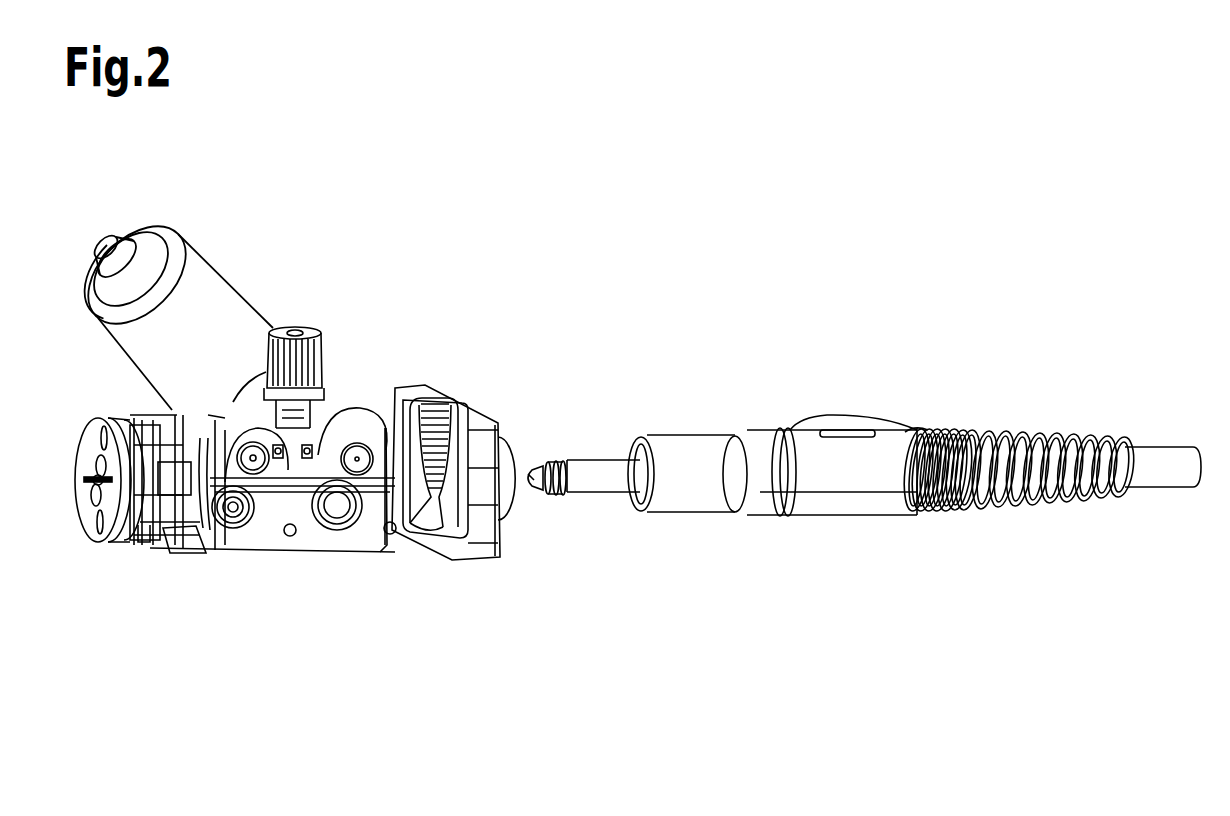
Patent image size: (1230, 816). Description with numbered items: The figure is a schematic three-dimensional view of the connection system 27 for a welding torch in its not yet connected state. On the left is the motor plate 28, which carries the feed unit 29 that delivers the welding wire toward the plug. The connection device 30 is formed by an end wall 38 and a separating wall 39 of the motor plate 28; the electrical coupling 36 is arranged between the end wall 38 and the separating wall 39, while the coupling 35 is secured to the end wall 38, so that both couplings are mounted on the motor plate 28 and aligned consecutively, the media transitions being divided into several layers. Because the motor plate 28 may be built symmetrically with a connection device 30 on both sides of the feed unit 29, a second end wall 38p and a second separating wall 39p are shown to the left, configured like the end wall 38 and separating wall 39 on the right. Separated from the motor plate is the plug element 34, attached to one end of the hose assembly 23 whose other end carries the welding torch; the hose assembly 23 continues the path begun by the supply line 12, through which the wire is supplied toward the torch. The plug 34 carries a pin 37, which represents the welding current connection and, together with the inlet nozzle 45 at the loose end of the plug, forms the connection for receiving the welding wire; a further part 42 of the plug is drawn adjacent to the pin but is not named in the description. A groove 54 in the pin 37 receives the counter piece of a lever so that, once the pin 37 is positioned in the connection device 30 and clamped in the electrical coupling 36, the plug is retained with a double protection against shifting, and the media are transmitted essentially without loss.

The supply line 12 is at (82, 517).
The hose assembly 23 is at (1155, 462).
The connection system 27 is at (843, 663).
The motor plate 28 is at (333, 245).
The feed unit 29 is at (358, 323).
The connection device 30 is at (215, 645).
The plug element 34 is at (847, 292).
The coupling 35 is at (472, 365).
The electrical coupling 36 is at (415, 570).
The pin 37 is at (590, 470).
The end wall 38 is at (458, 490).
The second end wall 38p is at (136, 538).
The separating wall 39 is at (373, 548).
The second separating wall 39p is at (197, 545).
The collar 42 is at (648, 437).
The inlet nozzle 45 is at (535, 490).
The groove 54 is at (560, 455).